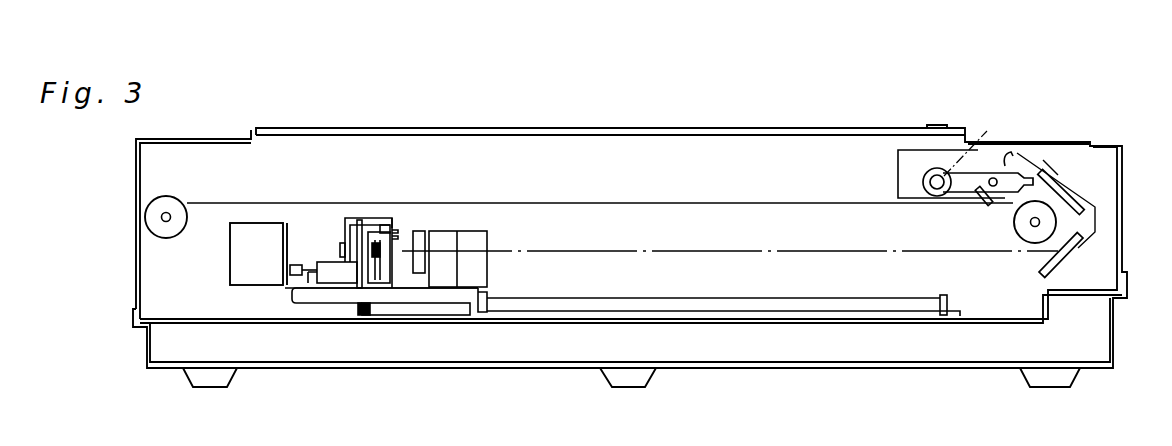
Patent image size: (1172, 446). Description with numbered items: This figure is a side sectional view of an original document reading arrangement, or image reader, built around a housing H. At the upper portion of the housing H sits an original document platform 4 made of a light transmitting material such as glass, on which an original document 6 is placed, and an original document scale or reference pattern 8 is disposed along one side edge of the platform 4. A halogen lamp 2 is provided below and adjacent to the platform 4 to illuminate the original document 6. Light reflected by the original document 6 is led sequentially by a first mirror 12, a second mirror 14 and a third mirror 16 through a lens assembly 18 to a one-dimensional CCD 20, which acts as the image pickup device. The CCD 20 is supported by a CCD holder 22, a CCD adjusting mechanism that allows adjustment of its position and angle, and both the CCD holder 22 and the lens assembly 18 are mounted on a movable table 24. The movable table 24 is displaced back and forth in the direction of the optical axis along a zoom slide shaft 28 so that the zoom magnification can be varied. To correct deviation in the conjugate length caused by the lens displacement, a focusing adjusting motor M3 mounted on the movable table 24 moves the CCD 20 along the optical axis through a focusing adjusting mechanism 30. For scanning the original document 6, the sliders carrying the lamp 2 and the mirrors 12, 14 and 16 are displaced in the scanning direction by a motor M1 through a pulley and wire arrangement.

The motor M1 is at (181, 199).
The focusing adjusting motor M3 is at (237, 257).
The housing H is at (134, 282).
The CCD holder 22 is at (367, 210).
The one-dimensional CCD 20 is at (381, 224).
The lens assembly 18 is at (478, 234).
The original document 6 is at (628, 129).
The original document platform 4 is at (706, 135).
The halogen lamp 2 is at (928, 170).
The original document scale 8 is at (948, 127).
The first mirror 12 is at (982, 190).
The second mirror 14 is at (1057, 171).
The third mirror 16 is at (1083, 246).
The focusing adjusting mechanism 30 is at (341, 302).
The movable table 24 is at (450, 305).
The zoom slide shaft 28 is at (878, 306).